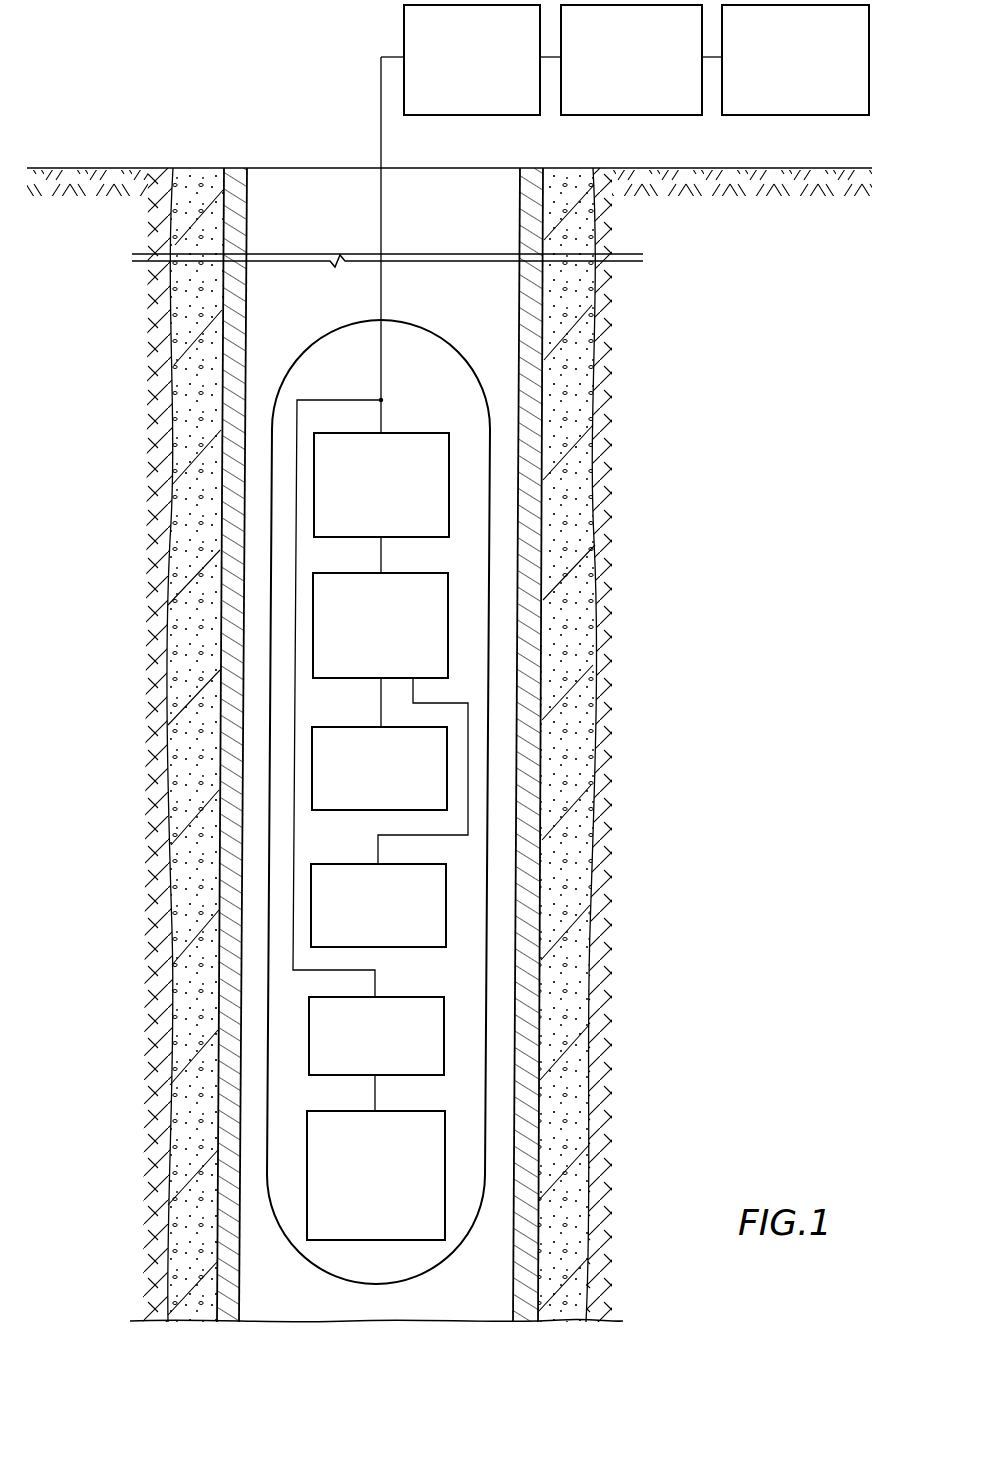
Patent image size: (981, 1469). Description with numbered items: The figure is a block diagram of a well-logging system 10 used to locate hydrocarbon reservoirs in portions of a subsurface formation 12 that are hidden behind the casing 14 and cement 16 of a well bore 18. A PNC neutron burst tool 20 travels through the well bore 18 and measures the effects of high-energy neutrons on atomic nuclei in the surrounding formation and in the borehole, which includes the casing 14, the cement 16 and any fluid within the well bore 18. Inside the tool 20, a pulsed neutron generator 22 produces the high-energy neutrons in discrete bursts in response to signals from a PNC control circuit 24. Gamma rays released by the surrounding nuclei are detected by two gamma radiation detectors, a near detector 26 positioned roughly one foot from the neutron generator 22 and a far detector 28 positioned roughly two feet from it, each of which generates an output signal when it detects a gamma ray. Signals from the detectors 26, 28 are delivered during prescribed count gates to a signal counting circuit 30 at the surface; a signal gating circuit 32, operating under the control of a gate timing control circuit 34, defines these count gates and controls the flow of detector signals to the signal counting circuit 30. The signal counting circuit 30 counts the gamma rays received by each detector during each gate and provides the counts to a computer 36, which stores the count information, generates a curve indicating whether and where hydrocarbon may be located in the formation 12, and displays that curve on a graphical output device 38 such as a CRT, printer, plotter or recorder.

The well-logging system 10 is at (309, 97).
The subsurface formation 12 is at (697, 513).
The casing 14 is at (526, 710).
The cement 16 is at (566, 776).
The well bore 18 is at (489, 1267).
The PNC neutron burst tool 20 is at (452, 345).
The pulsed neutron generator 22 is at (445, 1163).
The PNC control circuit 24 is at (444, 1030).
The near detector 26 is at (446, 892).
The far detector 28 is at (312, 757).
The signal counting circuit 30 is at (477, 115).
The signal gating circuit 32 is at (448, 608).
The gate timing control circuit 34 is at (449, 478).
The computer 36 is at (637, 115).
The graphical output device 38 is at (792, 115).